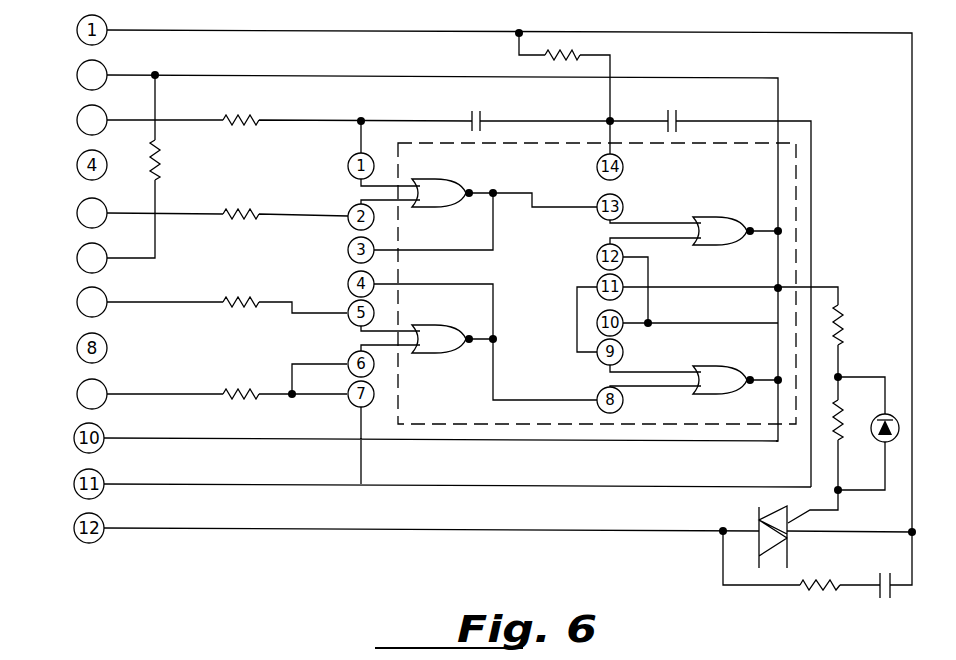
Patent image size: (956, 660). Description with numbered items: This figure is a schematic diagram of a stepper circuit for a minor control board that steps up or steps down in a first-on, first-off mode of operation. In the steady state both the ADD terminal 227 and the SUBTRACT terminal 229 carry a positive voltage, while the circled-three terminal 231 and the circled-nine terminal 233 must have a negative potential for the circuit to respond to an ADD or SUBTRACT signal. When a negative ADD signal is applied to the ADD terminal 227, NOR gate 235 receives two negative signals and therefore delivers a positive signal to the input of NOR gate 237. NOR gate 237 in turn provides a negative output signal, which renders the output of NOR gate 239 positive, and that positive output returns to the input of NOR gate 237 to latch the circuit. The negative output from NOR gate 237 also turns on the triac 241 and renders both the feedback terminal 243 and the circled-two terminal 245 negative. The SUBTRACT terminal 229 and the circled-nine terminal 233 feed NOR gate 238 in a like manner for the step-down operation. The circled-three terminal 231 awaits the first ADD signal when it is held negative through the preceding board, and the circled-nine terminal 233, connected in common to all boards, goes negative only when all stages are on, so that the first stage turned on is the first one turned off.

The circled 2 terminal 245 is at (78, 69).
The circled 3 terminal 231 is at (77, 119).
The ADD terminal 227 is at (78, 210).
The feedback terminal 243 is at (77, 258).
The SUBTRACT terminal 229 is at (77, 300).
The circled 9 terminal 233 is at (77, 392).
The NOR gate 235 is at (441, 188).
The NOR gate 238 is at (432, 330).
The NOR gate 237 is at (736, 222).
The NOR gate 239 is at (734, 370).
The triac 241 is at (756, 512).